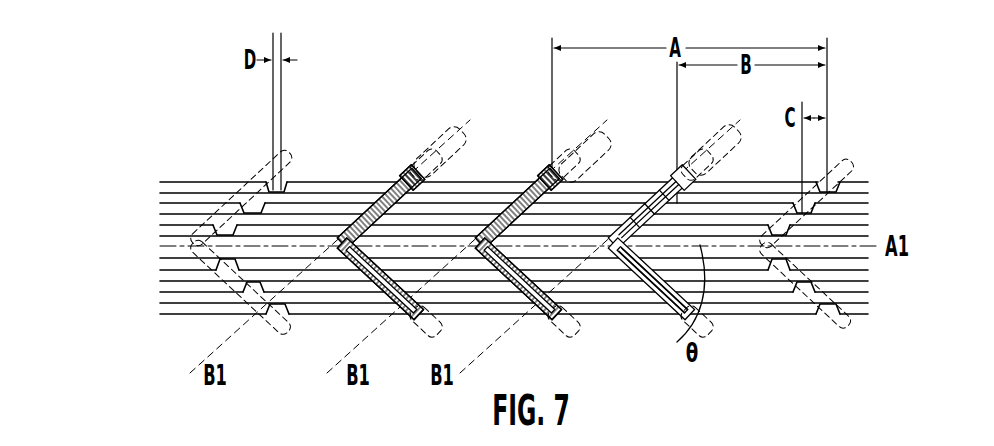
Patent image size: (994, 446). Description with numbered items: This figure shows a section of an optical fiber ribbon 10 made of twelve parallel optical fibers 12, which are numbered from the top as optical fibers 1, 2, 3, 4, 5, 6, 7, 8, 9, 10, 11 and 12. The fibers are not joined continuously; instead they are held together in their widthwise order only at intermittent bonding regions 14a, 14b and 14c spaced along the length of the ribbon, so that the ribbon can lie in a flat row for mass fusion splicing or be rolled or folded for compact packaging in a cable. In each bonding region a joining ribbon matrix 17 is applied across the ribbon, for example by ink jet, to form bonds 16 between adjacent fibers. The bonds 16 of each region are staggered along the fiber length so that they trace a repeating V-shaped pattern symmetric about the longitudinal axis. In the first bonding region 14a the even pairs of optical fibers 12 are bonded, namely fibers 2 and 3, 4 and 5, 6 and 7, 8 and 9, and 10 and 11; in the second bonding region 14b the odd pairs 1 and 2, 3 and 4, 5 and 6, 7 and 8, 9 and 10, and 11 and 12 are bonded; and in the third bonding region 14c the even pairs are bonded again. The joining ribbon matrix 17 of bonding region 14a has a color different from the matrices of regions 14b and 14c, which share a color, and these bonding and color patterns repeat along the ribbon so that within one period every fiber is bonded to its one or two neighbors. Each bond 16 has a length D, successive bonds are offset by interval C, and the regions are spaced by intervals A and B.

The optical fiber 1 is at (160, 182).
The optical fiber 2 is at (160, 193).
The optical fiber 3 is at (160, 203).
The optical fiber 4 is at (160, 214).
The optical fiber 5 is at (160, 225).
The optical fiber 6 is at (160, 236).
The optical fiber 7 is at (160, 258).
The optical fiber 8 is at (160, 270).
The optical fiber 9 is at (160, 281).
The optical fiber ribbon 10 is at (160, 292).
The optical fiber 11 is at (160, 303).
The optical fibers 12 is at (160, 314).
The first bonding region 14a is at (740, 107).
The second bonding region 14b is at (590, 140).
The third bonding region 14c is at (440, 138).
The bond 16 is at (250, 227).
The joining ribbon matrix 17 is at (408, 318).